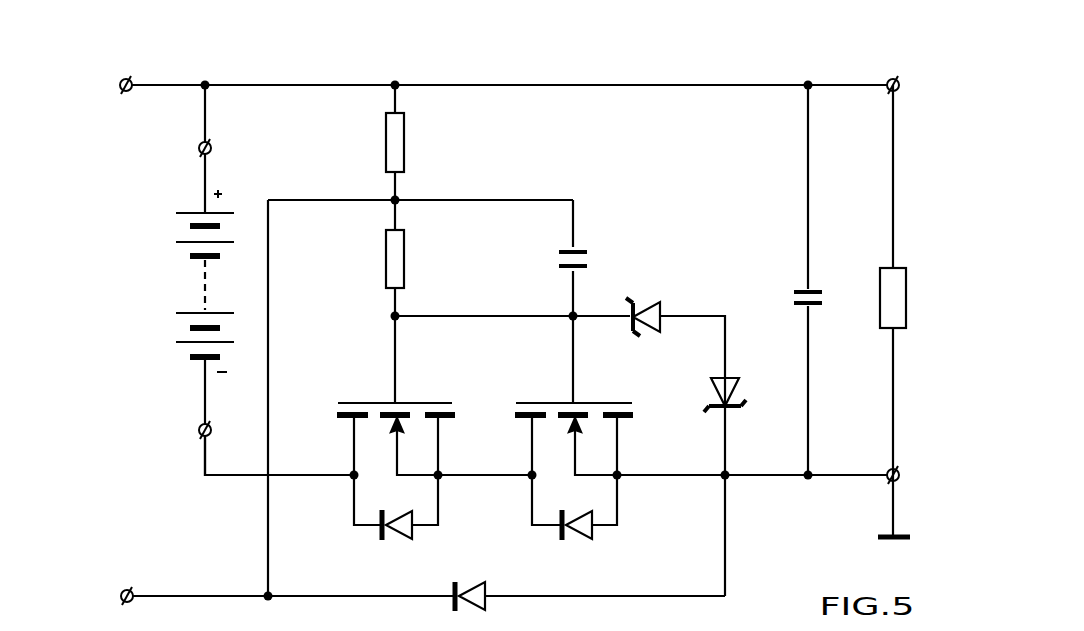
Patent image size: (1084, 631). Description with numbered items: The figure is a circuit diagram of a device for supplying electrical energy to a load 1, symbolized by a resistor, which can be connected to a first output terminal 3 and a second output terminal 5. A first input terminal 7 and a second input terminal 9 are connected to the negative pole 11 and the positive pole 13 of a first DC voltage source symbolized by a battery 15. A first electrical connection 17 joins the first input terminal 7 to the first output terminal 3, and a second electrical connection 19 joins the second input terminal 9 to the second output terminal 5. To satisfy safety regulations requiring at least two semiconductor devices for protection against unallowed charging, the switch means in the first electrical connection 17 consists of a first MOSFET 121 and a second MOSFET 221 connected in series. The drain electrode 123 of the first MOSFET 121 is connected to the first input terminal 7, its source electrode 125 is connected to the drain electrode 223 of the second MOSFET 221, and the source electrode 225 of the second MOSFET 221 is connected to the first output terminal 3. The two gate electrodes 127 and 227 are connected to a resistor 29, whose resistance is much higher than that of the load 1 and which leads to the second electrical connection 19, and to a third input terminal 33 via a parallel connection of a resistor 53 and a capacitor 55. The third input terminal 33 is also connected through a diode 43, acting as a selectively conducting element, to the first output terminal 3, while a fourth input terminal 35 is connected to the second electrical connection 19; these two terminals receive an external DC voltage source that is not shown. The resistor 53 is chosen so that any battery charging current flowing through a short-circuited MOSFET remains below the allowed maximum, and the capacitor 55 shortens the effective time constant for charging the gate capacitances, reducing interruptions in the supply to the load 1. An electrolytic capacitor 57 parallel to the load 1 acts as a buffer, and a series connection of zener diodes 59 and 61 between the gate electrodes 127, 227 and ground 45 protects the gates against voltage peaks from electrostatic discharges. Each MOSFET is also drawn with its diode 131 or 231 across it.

The load 1 is at (880, 290).
The first output terminal 3 is at (887, 470).
The second output terminal 5 is at (894, 79).
The first input terminal 7 is at (199, 436).
The second input terminal 9 is at (212, 149).
The negative pole 11 is at (190, 357).
The positive pole 13 is at (176, 213).
The battery 15 is at (184, 282).
The first electrical connection 17 is at (230, 476).
The second electrical connection 19 is at (628, 84).
The resistor 29 is at (386, 140).
The third input terminal 33 is at (128, 590).
The fourth input terminal 35 is at (124, 78).
The diode 43 is at (454, 586).
The ground 45 is at (880, 537).
The resistor 53 is at (386, 255).
The capacitor 55 is at (559, 258).
The electrolytic capacitor 57 is at (795, 297).
The zener diode 59 is at (643, 301).
The zener diode 61 is at (741, 395).
The first MOSFET 121 is at (405, 388).
The drain electrode 123 is at (338, 416).
The source electrode 125 is at (458, 416).
The gate electrode 127 is at (338, 403).
The diode 131 is at (383, 542).
The second MOSFET 221 is at (568, 408).
The drain electrode 223 is at (516, 416).
The source electrode 225 is at (618, 420).
The gate electrode 227 is at (633, 408).
The diode 231 is at (562, 542).